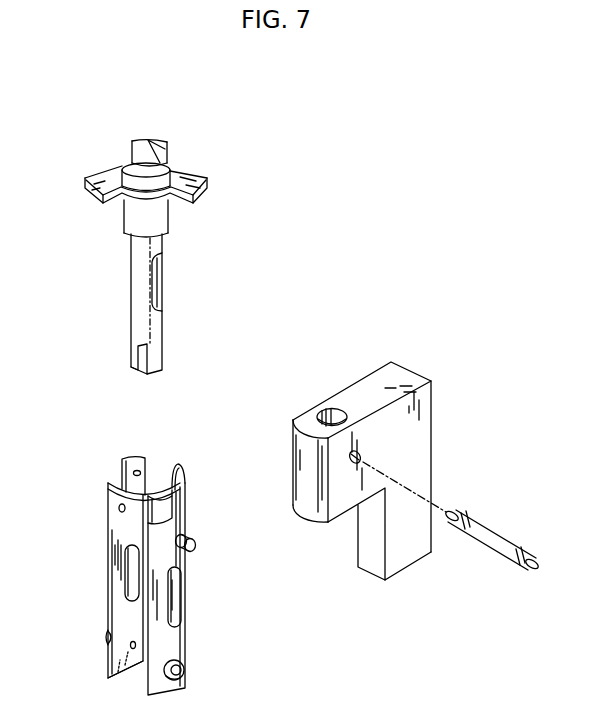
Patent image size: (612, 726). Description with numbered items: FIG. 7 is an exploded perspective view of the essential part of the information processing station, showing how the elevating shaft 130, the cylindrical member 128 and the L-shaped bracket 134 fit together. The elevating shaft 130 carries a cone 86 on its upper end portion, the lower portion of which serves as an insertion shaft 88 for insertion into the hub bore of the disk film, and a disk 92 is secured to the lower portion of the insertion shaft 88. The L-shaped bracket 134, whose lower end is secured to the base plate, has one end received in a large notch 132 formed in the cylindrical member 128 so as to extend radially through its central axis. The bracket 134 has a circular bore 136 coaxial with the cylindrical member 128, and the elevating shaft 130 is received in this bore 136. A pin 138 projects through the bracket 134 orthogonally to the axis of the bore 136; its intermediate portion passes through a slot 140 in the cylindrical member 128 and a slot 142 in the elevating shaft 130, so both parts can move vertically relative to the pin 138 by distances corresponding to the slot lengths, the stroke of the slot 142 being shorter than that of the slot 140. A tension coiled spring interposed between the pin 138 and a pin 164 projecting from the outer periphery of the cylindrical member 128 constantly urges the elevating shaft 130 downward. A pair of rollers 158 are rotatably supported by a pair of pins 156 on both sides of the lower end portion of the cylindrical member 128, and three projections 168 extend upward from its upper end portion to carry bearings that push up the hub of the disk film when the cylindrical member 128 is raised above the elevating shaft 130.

The cone 86 is at (146, 150).
The insertion shaft 88 is at (130, 165).
The disk 92 is at (87, 186).
The elevating shaft 130 is at (139, 296).
The slot 142 is at (156, 283).
The L-shaped bracket 134 is at (420, 437).
The circular bore 136 is at (330, 409).
The pin 138 is at (500, 536).
The cylindrical member 128 is at (170, 640).
The projections 168 is at (128, 457).
The slot 140 is at (130, 572).
The pin 164 is at (196, 545).
The pins 156 is at (185, 670).
The rollers 158 is at (103, 637).
The notch 132 is at (124, 680).